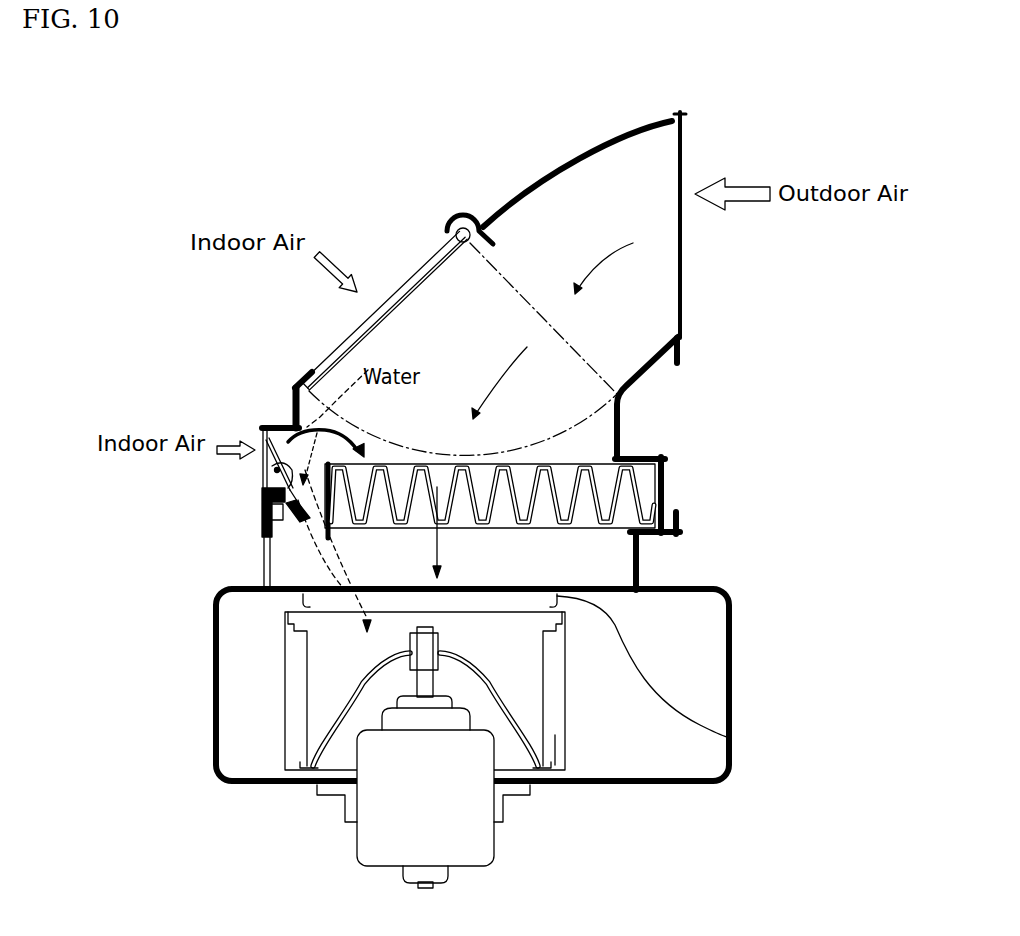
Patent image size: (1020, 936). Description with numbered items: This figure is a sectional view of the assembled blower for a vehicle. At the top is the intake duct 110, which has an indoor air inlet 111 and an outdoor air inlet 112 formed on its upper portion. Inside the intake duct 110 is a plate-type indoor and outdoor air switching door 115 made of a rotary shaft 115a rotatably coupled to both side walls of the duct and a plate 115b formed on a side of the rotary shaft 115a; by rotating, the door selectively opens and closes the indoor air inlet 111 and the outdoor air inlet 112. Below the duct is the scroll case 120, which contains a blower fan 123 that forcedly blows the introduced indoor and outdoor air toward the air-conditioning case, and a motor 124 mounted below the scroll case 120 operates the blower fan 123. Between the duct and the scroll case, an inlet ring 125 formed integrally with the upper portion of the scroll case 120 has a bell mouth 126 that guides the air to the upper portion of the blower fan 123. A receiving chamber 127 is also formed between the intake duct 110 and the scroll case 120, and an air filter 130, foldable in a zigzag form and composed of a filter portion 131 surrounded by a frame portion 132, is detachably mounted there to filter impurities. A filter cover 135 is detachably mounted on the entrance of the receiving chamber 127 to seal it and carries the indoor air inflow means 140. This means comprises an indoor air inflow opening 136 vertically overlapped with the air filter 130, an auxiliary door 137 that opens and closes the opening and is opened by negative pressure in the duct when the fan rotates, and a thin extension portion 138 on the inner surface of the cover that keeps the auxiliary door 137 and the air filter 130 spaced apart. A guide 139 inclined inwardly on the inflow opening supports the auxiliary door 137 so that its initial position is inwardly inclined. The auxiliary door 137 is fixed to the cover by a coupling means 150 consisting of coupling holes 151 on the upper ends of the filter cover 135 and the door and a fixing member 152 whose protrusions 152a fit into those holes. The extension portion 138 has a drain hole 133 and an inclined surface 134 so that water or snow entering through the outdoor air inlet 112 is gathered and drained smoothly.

The intake duct 110 is at (532, 322).
The indoor air inlet 111 is at (392, 286).
The outdoor air inlet 112 is at (681, 249).
The indoor and outdoor air switching door 115 is at (425, 182).
The rotary shaft 115a is at (456, 222).
The plate 115b is at (423, 273).
The scroll case 120 is at (526, 738).
The blower fan 123 is at (555, 735).
The motor 124 is at (482, 850).
The inlet ring 125 is at (613, 591).
The bell mouth 126 is at (727, 737).
The receiving chamber 127 is at (638, 508).
The air filter 130 is at (418, 538).
The filter portion 131 is at (300, 597).
The frame portion 132 is at (665, 477).
The drain hole 133 is at (267, 562).
The inclined surface 134 is at (262, 517).
The filter cover 135 is at (262, 510).
The indoor air inflow opening 136 is at (262, 460).
The auxiliary door 137 is at (265, 475).
The extension portion 138 is at (267, 493).
The guide 139 is at (263, 470).
The indoor air inflow means 140 is at (171, 481).
The coupling means 150 is at (242, 392).
The coupling holes 151 is at (270, 422).
The fixing member 152 is at (277, 410).
The protrusions 152a is at (262, 432).